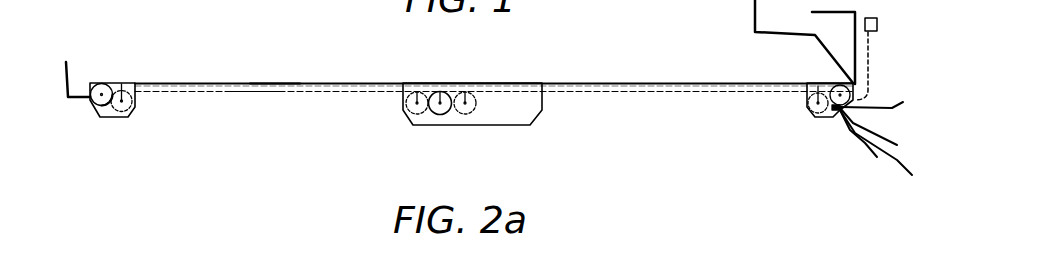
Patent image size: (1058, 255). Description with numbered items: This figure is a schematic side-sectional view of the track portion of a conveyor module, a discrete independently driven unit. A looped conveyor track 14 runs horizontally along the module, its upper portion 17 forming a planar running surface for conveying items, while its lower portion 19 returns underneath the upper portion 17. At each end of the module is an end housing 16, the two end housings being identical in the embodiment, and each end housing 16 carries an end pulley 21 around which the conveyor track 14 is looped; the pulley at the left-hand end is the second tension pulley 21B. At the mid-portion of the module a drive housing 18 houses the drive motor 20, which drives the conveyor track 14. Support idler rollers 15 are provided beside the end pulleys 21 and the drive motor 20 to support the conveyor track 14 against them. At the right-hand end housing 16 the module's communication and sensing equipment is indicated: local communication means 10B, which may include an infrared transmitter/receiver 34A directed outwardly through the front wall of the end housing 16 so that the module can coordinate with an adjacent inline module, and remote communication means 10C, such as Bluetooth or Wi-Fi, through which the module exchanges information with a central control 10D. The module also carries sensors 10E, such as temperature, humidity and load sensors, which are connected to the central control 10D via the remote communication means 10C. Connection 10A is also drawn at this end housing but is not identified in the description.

The conveyor track 14 is at (617, 83).
The support idler rollers 15 is at (133, 108).
The end housings 16 is at (107, 118).
The upper portion 17 is at (272, 82).
The drive housing 18 is at (523, 113).
The lower portion 19 is at (253, 95).
The drive motor 20 is at (440, 115).
The end pulleys 21 is at (102, 96).
The second tension pulley 21B is at (69, 65).
The cable 10A is at (871, 149).
The local communication means 10B is at (889, 132).
The remote communication means 10C is at (892, 106).
The central control 10D is at (877, 28).
The sensors 10E is at (805, 42).
The infrared transmitter/receiver 34A is at (890, 154).